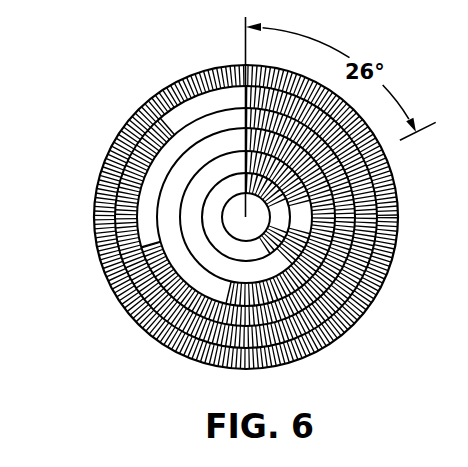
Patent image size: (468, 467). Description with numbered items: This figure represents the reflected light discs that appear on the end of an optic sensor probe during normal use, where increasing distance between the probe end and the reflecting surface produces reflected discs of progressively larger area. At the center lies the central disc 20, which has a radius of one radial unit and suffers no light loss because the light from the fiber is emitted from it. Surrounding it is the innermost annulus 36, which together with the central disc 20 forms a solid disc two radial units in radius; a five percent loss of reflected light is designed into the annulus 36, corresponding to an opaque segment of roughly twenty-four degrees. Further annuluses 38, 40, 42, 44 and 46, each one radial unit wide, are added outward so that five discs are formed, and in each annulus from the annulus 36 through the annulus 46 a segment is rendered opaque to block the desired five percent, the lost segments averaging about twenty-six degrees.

The central disc 20 is at (397, 177).
The innermost annulus 36 is at (282, 198).
The annulus 38 is at (300, 230).
The annulus 40 is at (318, 262).
The annulus 42 is at (325, 283).
The annulus 44 is at (340, 300).
The annulus 46 is at (327, 340).